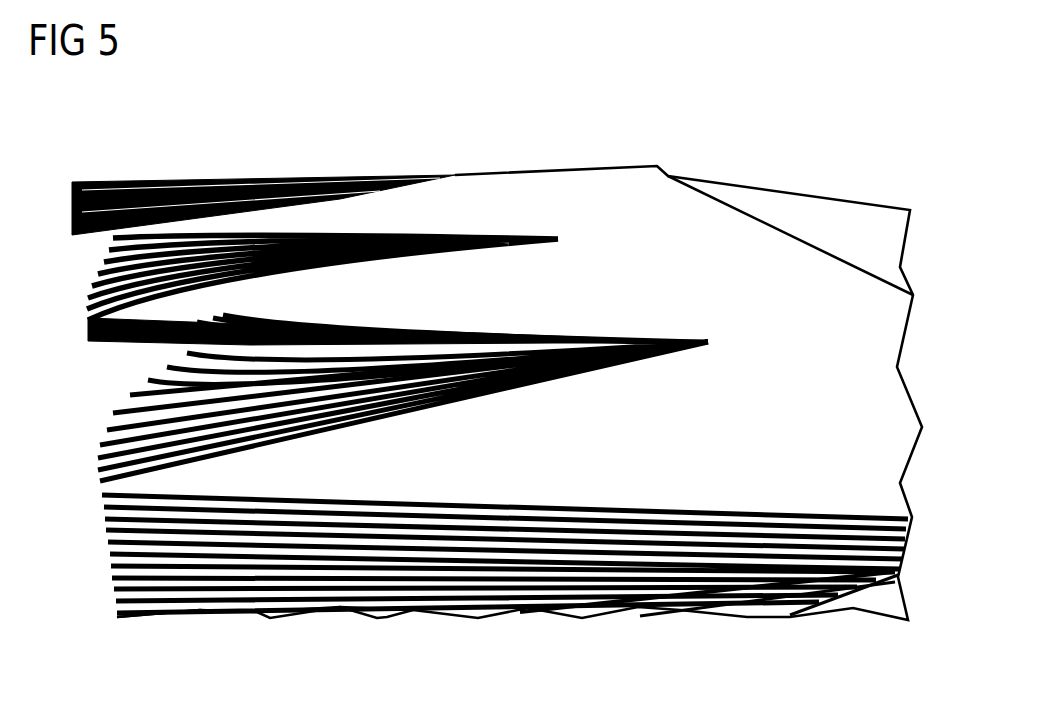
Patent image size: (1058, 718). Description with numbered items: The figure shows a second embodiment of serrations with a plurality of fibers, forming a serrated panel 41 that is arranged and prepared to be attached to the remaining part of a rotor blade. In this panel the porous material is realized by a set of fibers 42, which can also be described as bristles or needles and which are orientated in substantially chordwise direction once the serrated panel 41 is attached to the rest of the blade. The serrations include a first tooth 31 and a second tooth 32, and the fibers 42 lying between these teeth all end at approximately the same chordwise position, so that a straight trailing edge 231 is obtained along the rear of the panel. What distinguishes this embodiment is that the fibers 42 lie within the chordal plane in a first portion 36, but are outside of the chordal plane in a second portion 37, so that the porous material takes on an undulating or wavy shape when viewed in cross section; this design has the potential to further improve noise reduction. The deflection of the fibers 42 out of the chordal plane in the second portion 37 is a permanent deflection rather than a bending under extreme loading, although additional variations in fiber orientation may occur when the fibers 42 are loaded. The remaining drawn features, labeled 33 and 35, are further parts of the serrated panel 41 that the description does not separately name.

The serrated panel 41 is at (692, 104).
The first lamella layer 33 is at (337, 208).
The second tooth 32 is at (247, 305).
The lamella bundle 35 is at (333, 363).
The first portion 36 is at (553, 357).
The second portion 37 is at (173, 370).
The straight trailing edge 231 is at (107, 540).
The first tooth 31 is at (410, 467).
The fibers 42 is at (650, 595).